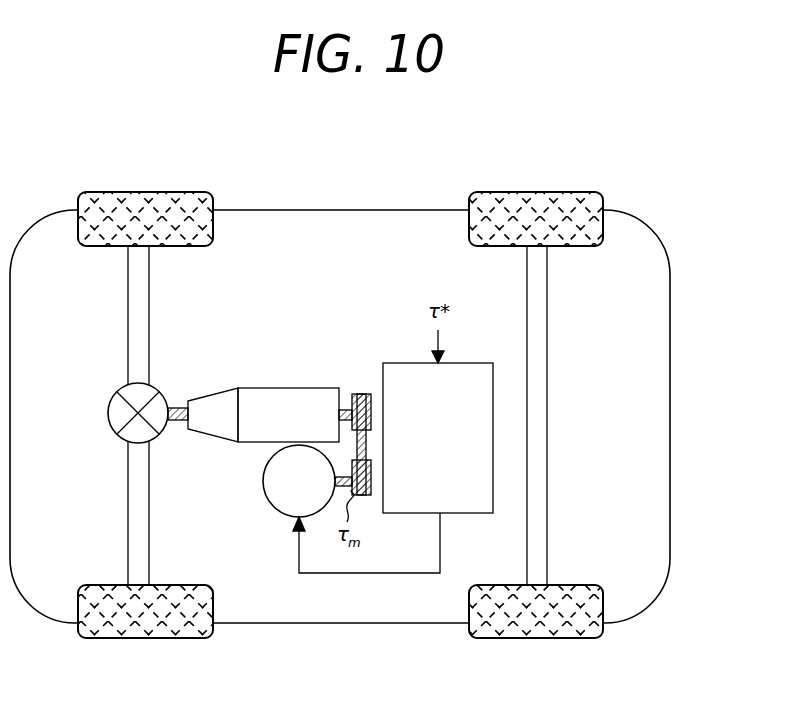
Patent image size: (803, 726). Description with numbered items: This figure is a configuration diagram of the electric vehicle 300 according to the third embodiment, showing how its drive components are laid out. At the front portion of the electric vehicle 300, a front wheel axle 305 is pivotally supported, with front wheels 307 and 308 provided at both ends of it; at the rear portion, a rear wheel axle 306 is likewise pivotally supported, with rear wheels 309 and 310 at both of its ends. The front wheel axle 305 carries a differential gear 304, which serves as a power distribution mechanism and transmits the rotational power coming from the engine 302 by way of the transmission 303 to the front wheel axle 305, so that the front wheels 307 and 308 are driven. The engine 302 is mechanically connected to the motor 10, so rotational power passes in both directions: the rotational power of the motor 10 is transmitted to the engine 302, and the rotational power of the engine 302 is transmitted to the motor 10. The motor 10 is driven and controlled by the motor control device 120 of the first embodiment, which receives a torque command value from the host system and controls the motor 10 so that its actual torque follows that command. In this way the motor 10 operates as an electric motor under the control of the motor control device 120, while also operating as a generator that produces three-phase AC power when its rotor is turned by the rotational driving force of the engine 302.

The electric vehicle 300 is at (671, 332).
The engine 302 is at (265, 388).
The transmission 303 is at (207, 391).
The differential gear 304 is at (108, 417).
The front wheel axle 305 is at (127, 320).
The rear wheel axle 306 is at (549, 412).
The front wheel 307 is at (145, 640).
The front wheel 308 is at (145, 192).
The rear wheel 309 is at (538, 640).
The rear wheel 310 is at (537, 192).
The motor 10 is at (271, 506).
The motor control device 120 is at (452, 362).